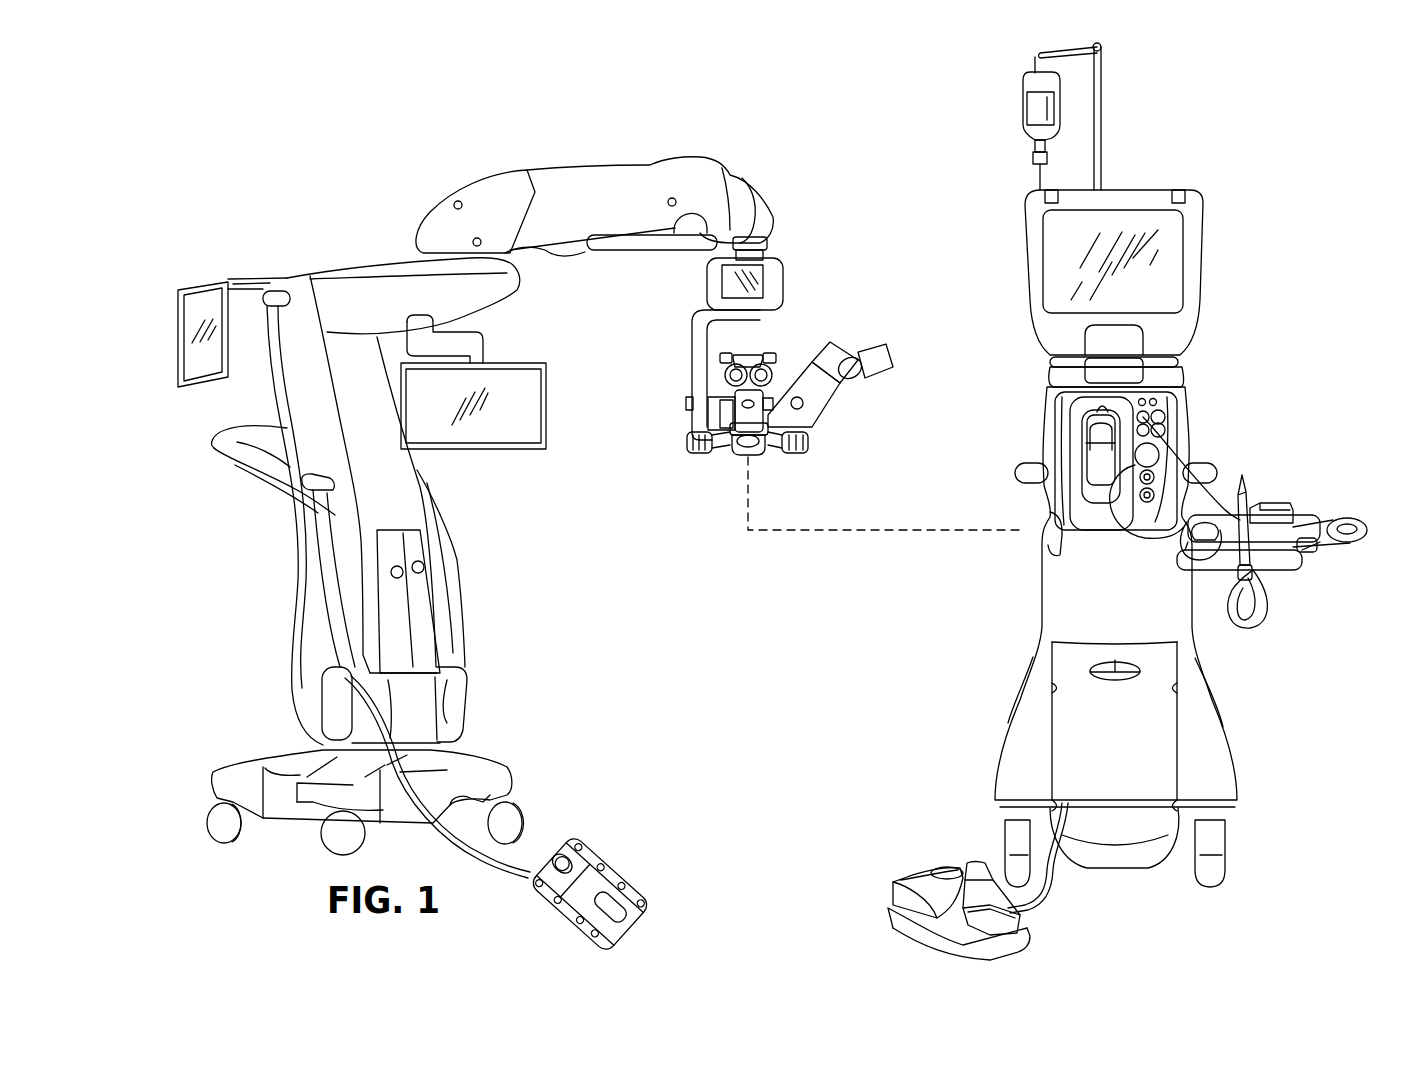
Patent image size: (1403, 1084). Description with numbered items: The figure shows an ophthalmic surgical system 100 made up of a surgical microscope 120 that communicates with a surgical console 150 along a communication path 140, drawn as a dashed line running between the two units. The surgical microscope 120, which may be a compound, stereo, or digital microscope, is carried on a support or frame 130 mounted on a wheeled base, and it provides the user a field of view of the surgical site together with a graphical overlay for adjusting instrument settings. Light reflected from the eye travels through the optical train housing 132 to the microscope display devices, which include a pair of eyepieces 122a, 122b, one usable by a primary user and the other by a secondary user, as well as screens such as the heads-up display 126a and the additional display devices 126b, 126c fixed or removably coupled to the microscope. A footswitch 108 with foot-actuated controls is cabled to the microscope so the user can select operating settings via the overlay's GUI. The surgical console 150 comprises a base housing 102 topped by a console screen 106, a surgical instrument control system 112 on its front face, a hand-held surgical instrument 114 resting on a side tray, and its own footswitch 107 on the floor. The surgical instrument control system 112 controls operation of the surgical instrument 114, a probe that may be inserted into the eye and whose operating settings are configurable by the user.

The ophthalmic surgical system 100 is at (248, 128).
The base housing 102 is at (1033, 617).
The console screen 106 is at (1178, 258).
The footswitch 107 is at (921, 858).
The footswitch 108 is at (624, 843).
The surgical instrument control system 112 is at (1030, 450).
The hand-held surgical instrument 114 is at (1248, 476).
The surgical microscope 120 is at (680, 128).
The eyepiece 122a is at (787, 343).
The eyepiece 122b is at (851, 406).
The heads-up display 126a is at (727, 283).
The microscope display device 126b is at (494, 463).
The microscope display device 126c is at (183, 403).
The support or frame 130 is at (484, 651).
The optical train housing 132 is at (787, 378).
The communication path 140 is at (900, 534).
The surgical console 150 is at (1228, 180).